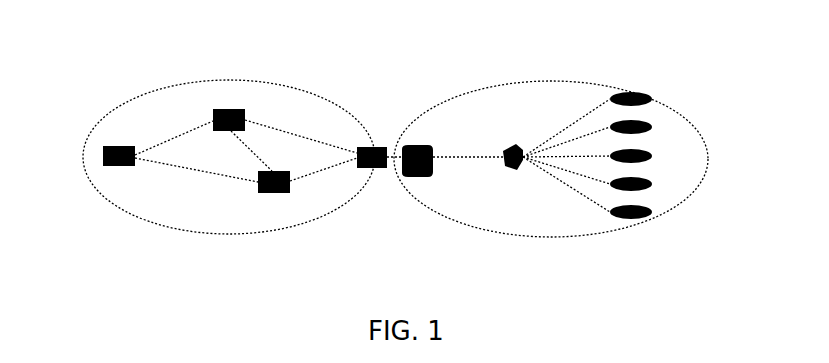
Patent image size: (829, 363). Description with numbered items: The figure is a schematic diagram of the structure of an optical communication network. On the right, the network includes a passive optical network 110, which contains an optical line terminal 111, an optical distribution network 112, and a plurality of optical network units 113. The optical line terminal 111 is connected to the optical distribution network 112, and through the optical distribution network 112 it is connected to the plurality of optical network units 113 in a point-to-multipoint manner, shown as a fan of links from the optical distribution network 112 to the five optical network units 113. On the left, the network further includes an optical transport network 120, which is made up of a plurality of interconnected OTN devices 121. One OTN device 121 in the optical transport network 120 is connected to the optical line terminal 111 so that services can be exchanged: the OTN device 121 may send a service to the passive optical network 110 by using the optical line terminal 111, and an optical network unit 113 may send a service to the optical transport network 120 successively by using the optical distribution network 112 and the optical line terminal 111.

The passive optical network 110 is at (558, 82).
The optical line terminal 111 is at (430, 145).
The optical distribution network 112 is at (517, 163).
The optical network units 113 is at (643, 152).
The optical transport network 120 is at (222, 78).
The OTN devices 121 is at (125, 162).